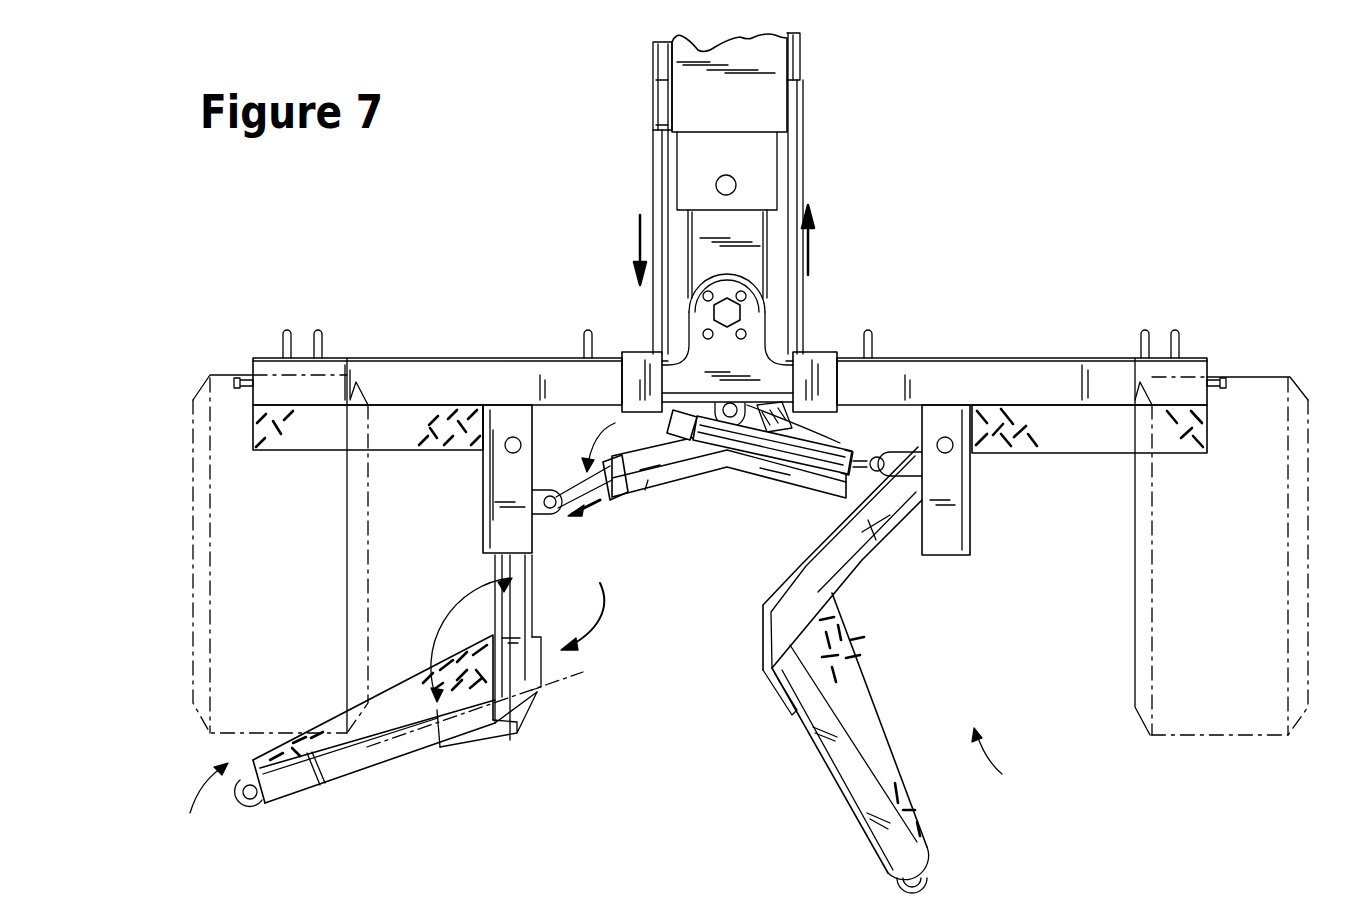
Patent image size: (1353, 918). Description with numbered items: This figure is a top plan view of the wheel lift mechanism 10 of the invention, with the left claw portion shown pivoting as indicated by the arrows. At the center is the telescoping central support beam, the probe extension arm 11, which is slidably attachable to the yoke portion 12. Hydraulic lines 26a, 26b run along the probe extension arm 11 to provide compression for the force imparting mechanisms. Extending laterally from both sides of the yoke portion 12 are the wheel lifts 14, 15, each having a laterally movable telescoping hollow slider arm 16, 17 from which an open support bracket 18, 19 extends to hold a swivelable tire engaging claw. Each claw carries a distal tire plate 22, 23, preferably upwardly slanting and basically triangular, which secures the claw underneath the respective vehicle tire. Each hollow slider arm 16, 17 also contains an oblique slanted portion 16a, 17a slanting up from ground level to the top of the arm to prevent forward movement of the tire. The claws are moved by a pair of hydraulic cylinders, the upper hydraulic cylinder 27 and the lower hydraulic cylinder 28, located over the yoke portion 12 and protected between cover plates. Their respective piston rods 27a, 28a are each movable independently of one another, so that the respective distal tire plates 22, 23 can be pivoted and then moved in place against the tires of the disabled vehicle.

The wheel lift mechanism 10 is at (920, 212).
The probe extension arm 11 is at (768, 98).
The yoke portion 12 is at (774, 322).
The wheel lift 14 is at (200, 805).
The wheel lift 15 is at (1003, 755).
The hollow slider arm 16 is at (408, 372).
The oblique slanted portion 16a is at (400, 436).
The hollow slider arm 17 is at (1050, 382).
The oblique slanted portion 17a is at (1068, 440).
The open support bracket 18 is at (496, 530).
The open support bracket 19 is at (945, 548).
The distal tire plate 22 is at (404, 688).
The distal tire plate 23 is at (872, 725).
The hydraulic line 26a is at (655, 185).
The hydraulic line 26b is at (805, 182).
The upper hydraulic cylinder 27 is at (628, 478).
The piston rod 27a is at (578, 478).
The lower hydraulic cylinder 28 is at (792, 485).
The piston rod 28a is at (872, 445).